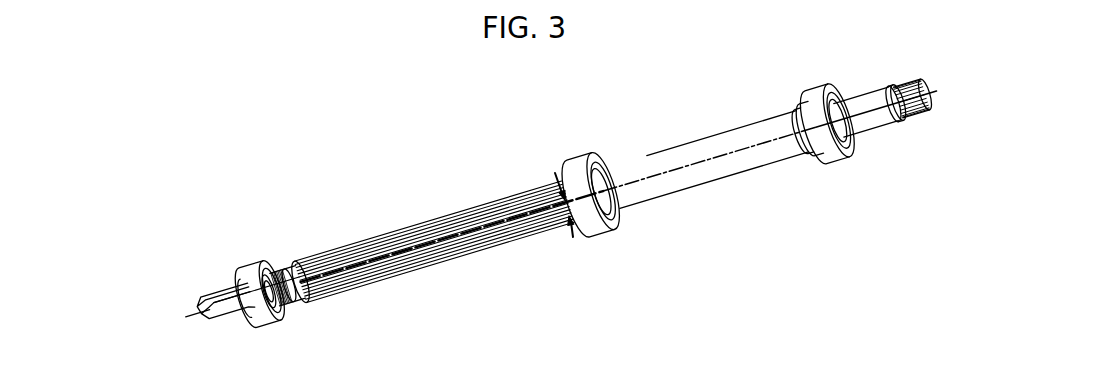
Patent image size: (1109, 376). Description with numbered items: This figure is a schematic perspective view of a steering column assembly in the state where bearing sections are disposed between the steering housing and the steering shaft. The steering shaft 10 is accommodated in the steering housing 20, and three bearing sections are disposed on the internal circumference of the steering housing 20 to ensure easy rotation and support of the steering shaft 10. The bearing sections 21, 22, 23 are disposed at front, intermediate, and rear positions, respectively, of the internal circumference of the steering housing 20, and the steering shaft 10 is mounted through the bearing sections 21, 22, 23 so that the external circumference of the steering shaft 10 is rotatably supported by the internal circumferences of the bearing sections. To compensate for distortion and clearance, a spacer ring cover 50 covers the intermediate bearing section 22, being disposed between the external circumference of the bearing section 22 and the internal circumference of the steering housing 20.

The steering shaft 10 is at (877, 125).
The steering housing 20 is at (563, 150).
The bearing section 21 is at (244, 264).
The bearing section 22 is at (558, 172).
The bearing section 23 is at (842, 160).
The spacer ring cover 50 is at (597, 166).